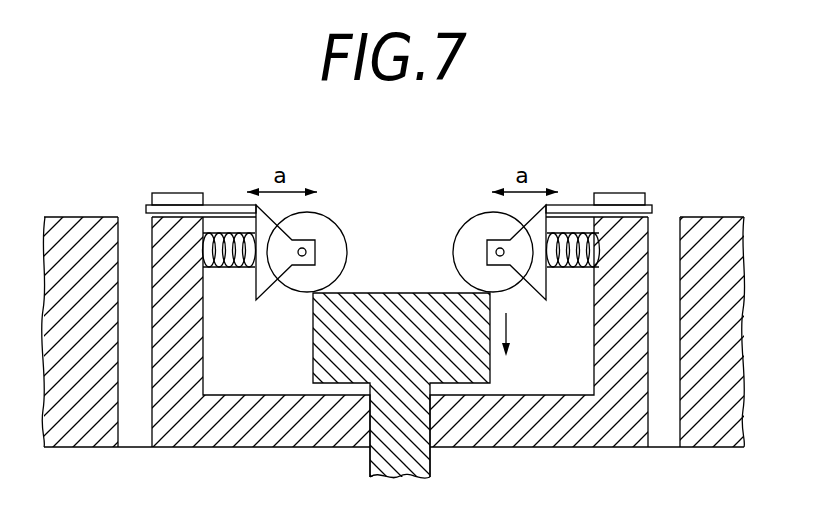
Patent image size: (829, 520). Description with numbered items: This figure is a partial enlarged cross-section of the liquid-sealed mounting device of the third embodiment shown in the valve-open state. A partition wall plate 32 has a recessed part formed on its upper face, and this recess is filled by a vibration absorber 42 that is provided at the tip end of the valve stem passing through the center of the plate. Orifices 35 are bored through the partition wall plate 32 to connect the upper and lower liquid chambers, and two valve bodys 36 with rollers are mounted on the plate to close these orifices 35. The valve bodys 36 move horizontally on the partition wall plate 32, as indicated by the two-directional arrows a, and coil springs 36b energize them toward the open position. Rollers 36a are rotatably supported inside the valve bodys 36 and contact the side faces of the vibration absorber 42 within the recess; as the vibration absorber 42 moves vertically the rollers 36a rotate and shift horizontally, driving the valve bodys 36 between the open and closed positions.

The partition wall plate 32 is at (742, 242).
The orifices 35 is at (132, 230).
The valve bodys 36 is at (232, 206).
The rollers 36a is at (320, 213).
The coil springs 36b is at (232, 270).
The vibration absorber 42 is at (401, 293).